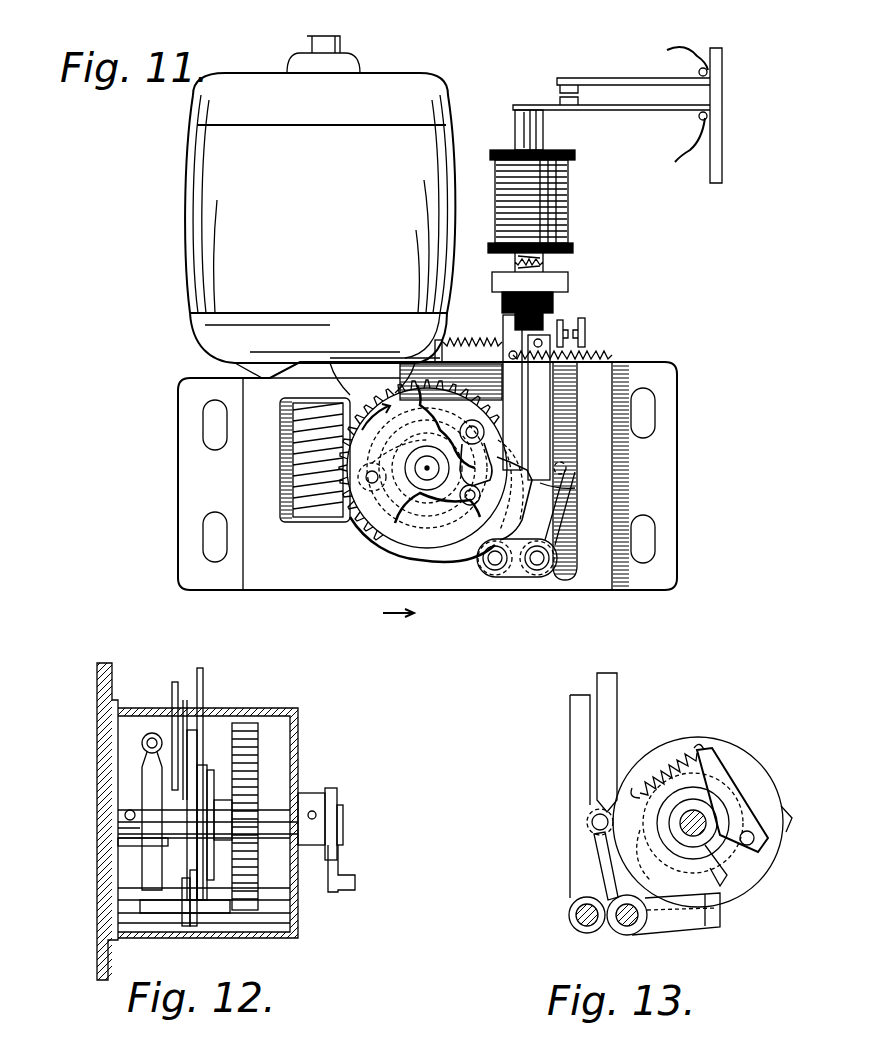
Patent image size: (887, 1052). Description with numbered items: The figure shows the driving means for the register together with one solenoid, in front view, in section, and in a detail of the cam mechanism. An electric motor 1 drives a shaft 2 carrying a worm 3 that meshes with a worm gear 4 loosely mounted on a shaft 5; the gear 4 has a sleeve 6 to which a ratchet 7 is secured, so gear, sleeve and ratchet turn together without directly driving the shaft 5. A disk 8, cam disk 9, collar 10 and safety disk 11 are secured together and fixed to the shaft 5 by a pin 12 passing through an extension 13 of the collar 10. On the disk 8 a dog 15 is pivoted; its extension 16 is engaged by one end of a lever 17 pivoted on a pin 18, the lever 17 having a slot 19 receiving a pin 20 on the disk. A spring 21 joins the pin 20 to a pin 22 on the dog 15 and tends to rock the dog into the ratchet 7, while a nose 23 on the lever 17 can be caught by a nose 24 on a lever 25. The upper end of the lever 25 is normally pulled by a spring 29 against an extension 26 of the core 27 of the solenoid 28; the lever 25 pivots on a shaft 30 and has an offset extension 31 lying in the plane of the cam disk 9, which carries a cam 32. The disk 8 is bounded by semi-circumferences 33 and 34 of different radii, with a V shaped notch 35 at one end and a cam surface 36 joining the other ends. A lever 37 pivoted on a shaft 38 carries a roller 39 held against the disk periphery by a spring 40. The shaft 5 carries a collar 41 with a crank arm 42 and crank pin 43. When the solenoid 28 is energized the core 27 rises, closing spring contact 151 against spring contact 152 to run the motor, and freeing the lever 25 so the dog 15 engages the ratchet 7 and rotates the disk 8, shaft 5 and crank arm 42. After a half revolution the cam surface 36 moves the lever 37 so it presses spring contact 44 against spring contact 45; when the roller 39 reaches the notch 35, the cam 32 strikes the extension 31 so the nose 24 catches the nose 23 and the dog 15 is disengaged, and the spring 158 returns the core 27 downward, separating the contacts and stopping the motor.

In FIG. 11, the electric motor 1 is at (420, 80).
In FIG. 11, the shaft 2 is at (312, 400).
In FIG. 11, the worm 3 is at (300, 440).
In FIG. 11, the worm gear 4 is at (385, 500).
In FIG. 12, the worm gear 4 is at (258, 770).
In FIG. 11, the shaft 5 is at (430, 480).
In FIG. 12, the shaft 5 is at (342, 815).
In FIG. 13, the shaft 5 is at (700, 830).
In FIG. 12, the sleeve 6 is at (215, 812).
In FIG. 11, the ratchet 7 is at (455, 525).
In FIG. 12, the ratchet 7 is at (204, 785).
In FIG. 12, the disk 8 is at (193, 740).
In FIG. 13, the disk 8 is at (755, 772).
In FIG. 11, the cam disk 9 is at (300, 425).
In FIG. 12, the cam disk 9 is at (185, 700).
In FIG. 13, the cam disk 9 is at (692, 860).
In FIG. 12, the collar 10 is at (133, 842).
In FIG. 12, the safety disk 11 is at (163, 740).
In FIG. 11, the pin 12 is at (455, 382).
In FIG. 12, the pin 12 is at (125, 816).
In FIG. 12, the extension 13 is at (133, 850).
In FIG. 11, the dog 15 is at (520, 420).
In FIG. 11, the extension 16 is at (484, 437).
In FIG. 11, the lever 17 is at (405, 512).
In FIG. 12, the lever 17 is at (205, 845).
In FIG. 11, the pin 18 is at (370, 480).
In FIG. 12, the pin 18 is at (226, 830).
In FIG. 11, the slot 19 is at (555, 488).
In FIG. 11, the pin 20 is at (472, 545).
In FIG. 11, the spring 21 is at (418, 440).
In FIG. 11, the pin 22 is at (432, 402).
In FIG. 11, the nose 23 is at (480, 495).
In FIG. 11, the nose 24 is at (508, 478).
In FIG. 13, the nose 24 is at (628, 838).
In FIG. 11, the lever 25 is at (577, 522).
In FIG. 12, the lever 25 is at (203, 692).
In FIG. 13, the lever 25 is at (610, 727).
In FIG. 11, the extension 26 is at (545, 308).
In FIG. 11, the core 27 is at (546, 145).
In FIG. 11, the solenoid 28 is at (572, 196).
In FIG. 11, the spring 29 is at (614, 354).
In FIG. 11, the shaft 30 is at (500, 565).
In FIG. 12, the shaft 30 is at (150, 920).
In FIG. 13, the shaft 30 is at (627, 935).
In FIG. 11, the offset extension 31 is at (440, 535).
In FIG. 12, the offset extension 31 is at (185, 900).
In FIG. 13, the offset extension 31 is at (685, 930).
In FIG. 11, the cam 32 is at (400, 500).
In FIG. 12, the cam 32 is at (195, 888).
In FIG. 13, the cam 32 is at (745, 900).
In FIG. 13, the semi-circumference 33 is at (725, 748).
In FIG. 13, the semi-circumference 34 is at (722, 928).
In FIG. 11, the V shaped notch 35 is at (535, 520).
In FIG. 13, the V shaped notch 35 is at (598, 850).
In FIG. 13, the cam surface 36 is at (786, 815).
In FIG. 11, the lever 37 is at (565, 545).
In FIG. 12, the lever 37 is at (175, 685).
In FIG. 13, the lever 37 is at (575, 750).
In FIG. 11, the shaft 38 is at (542, 565).
In FIG. 13, the shaft 38 is at (585, 933).
In FIG. 11, the roller 39 is at (565, 468).
In FIG. 13, the roller 39 is at (590, 830).
In FIG. 11, the spring 40 is at (470, 345).
In FIG. 12, the collar 41 is at (317, 795).
In FIG. 12, the crank arm 42 is at (344, 820).
In FIG. 12, the crank pin 43 is at (352, 882).
In FIG. 11, the spring contact 44 is at (565, 321).
In FIG. 11, the spring contact 45 is at (586, 320).
In FIG. 11, the spring contact 151 is at (689, 152).
In FIG. 11, the spring contact 152 is at (693, 52).
In FIG. 11, the spring 158 is at (545, 265).